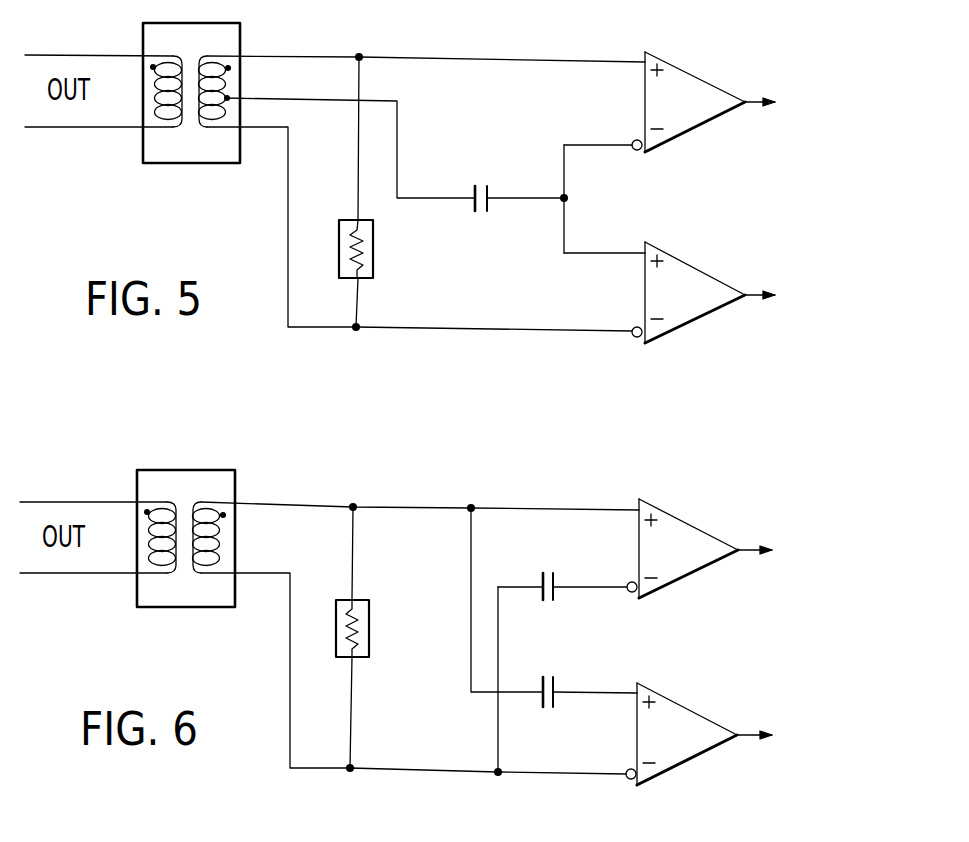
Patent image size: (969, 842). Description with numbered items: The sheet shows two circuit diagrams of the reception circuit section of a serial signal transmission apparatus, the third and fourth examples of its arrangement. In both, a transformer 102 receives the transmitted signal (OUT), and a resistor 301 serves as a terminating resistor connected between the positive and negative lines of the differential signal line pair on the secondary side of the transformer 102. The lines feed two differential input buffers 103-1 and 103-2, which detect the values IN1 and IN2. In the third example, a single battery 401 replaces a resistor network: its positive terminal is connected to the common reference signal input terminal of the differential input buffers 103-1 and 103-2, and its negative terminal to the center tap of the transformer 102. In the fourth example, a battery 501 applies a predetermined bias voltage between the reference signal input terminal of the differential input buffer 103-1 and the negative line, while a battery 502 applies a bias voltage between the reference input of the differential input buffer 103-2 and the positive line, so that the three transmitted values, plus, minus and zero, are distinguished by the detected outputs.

In FIG. 5, the transformer 102 is at (155, 163).
In FIG. 6, the transformer 102 is at (147, 607).
In FIG. 5, the resistor 301 is at (373, 255).
In FIG. 6, the resistor 301 is at (369, 623).
In FIG. 5, the battery 401 is at (480, 185).
In FIG. 5, the differential input buffer 103-1 is at (710, 48).
In FIG. 6, the differential input buffer 103-1 is at (705, 497).
In FIG. 5, the differential input buffer 103-2 is at (710, 238).
In FIG. 6, the differential input buffer 103-2 is at (703, 682).
In FIG. 6, the battery 501 is at (548, 568).
In FIG. 6, the battery 502 is at (549, 708).